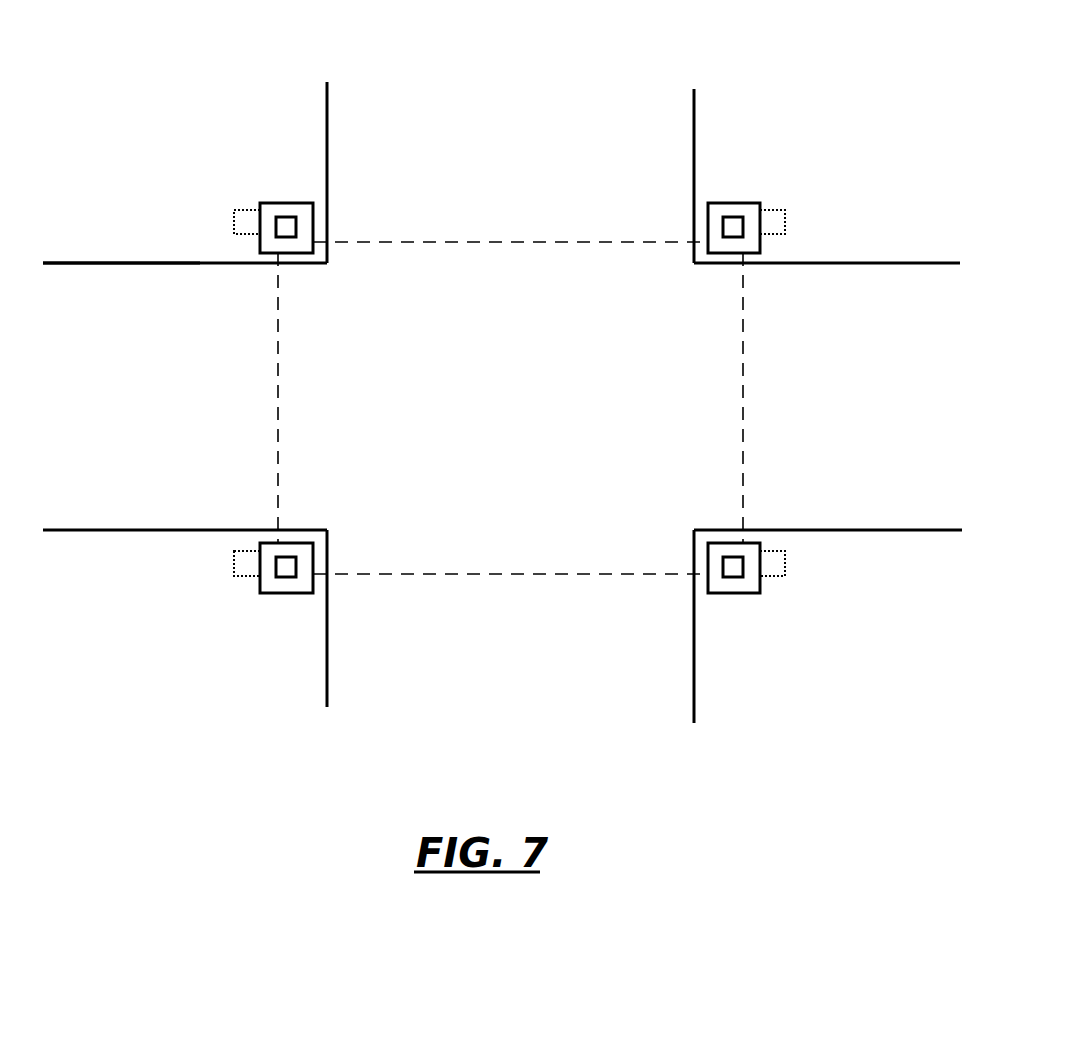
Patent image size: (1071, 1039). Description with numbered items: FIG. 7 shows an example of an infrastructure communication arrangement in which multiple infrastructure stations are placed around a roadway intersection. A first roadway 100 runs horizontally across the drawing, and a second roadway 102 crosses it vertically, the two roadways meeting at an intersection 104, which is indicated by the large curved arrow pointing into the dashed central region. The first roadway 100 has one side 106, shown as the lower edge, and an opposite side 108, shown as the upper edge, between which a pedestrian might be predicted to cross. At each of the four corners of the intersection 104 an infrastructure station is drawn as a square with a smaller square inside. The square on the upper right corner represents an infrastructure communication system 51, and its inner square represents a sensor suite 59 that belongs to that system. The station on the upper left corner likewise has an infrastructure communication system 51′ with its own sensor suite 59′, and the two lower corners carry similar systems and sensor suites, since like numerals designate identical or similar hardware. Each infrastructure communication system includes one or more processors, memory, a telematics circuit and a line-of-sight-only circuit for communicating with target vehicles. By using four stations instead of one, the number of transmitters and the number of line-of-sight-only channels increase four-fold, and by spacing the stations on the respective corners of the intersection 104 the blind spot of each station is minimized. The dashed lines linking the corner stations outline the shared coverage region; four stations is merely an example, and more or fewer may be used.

The first roadway 100 is at (157, 263).
The second roadway 102 is at (327, 101).
The intersection 104 is at (470, 305).
The one side of roadway 106 is at (157, 531).
The opposite side of roadway 108 is at (206, 263).
The infrastructure communication system 51 is at (719, 190).
The infrastructure communication system 51′ is at (293, 190).
The sensor suite 59 is at (723, 222).
The sensor suite 59′ is at (296, 222).